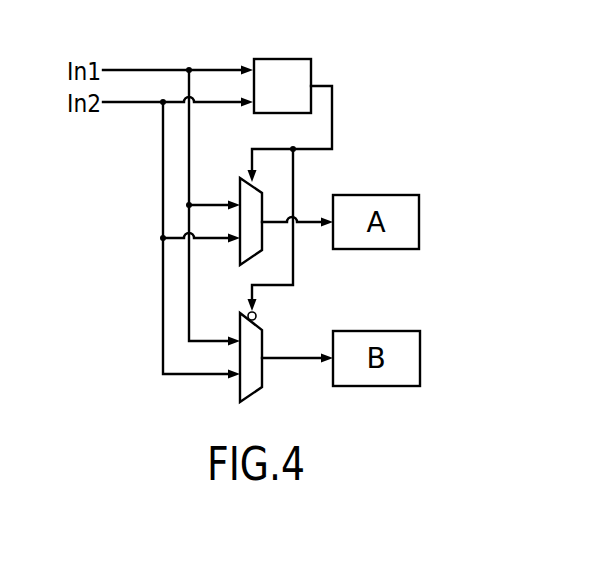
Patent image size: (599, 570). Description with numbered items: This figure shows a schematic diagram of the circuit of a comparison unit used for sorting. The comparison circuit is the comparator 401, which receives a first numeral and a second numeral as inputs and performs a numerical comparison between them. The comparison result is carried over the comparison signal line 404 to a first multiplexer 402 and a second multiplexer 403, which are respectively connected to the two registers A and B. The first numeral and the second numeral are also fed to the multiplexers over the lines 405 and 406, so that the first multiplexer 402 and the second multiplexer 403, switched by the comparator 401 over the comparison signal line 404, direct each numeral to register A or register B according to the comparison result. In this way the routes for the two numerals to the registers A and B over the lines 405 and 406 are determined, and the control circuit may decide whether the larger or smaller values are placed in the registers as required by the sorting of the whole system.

The comparator 401 is at (303, 68).
The first multiplexer 402 is at (257, 202).
The second multiplexer 403 is at (257, 338).
The comparison signal line 404 is at (335, 116).
The line 405 is at (163, 145).
The line 406 is at (189, 183).